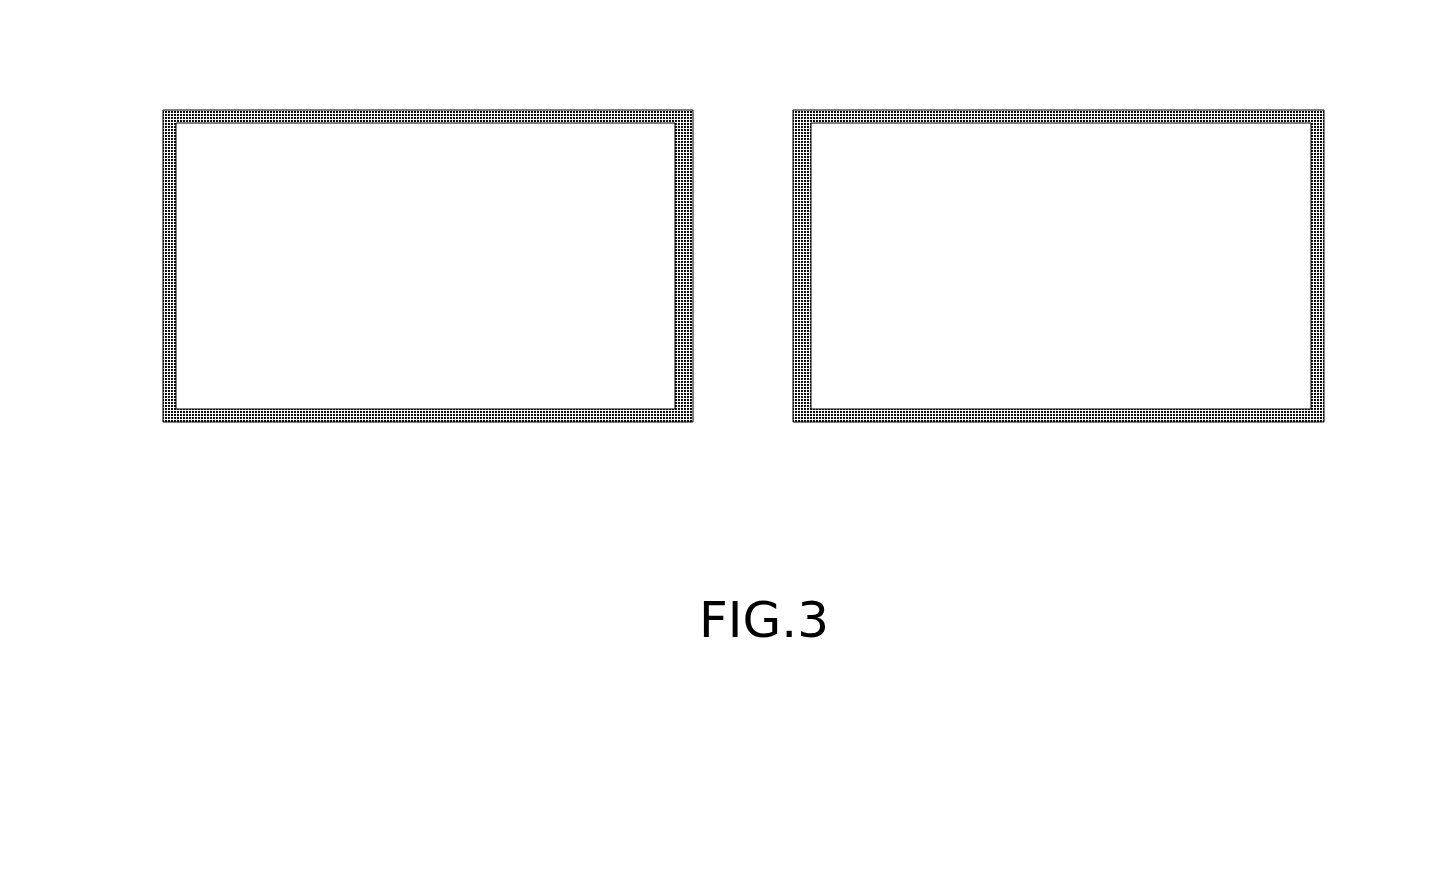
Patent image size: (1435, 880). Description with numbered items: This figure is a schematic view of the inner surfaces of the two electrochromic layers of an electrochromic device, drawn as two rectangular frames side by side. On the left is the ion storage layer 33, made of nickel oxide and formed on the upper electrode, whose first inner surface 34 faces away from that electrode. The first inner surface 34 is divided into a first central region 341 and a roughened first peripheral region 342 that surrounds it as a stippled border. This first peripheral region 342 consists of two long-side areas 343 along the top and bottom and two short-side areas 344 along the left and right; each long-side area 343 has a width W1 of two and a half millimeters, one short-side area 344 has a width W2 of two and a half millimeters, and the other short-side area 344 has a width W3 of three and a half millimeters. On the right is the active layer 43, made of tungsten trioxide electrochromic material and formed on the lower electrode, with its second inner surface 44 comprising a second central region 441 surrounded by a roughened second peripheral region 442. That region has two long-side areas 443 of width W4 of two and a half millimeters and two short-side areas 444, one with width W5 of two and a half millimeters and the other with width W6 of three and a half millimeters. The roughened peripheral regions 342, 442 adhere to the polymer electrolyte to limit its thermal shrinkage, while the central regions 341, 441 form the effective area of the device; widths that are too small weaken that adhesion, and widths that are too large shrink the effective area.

The ion storage layer 33 is at (345, 148).
The first inner surface 34 is at (565, 37).
The first central region 341 is at (455, 135).
The first peripheral region 342 is at (541, 118).
The long-side areas 343 is at (256, 118).
The short-side areas 344 is at (168, 240).
The active layer 43 is at (993, 138).
The second inner surface 44 is at (1215, 48).
The second central region 441 is at (1112, 133).
The second peripheral region 442 is at (1192, 115).
The long-side areas 443 is at (889, 118).
The short-side areas 444 is at (803, 248).
The width of long-side areas of first peripheral region W1 is at (129, 155).
The width of one short-side area of first peripheral region W2 is at (163, 410).
The width of other short-side area of first peripheral region W3 is at (725, 64).
The width of long-side areas of second peripheral region W4 is at (773, 155).
The width of one short-side area of second peripheral region W5 is at (1355, 63).
The width of other short-side area of second peripheral region W6 is at (793, 410).